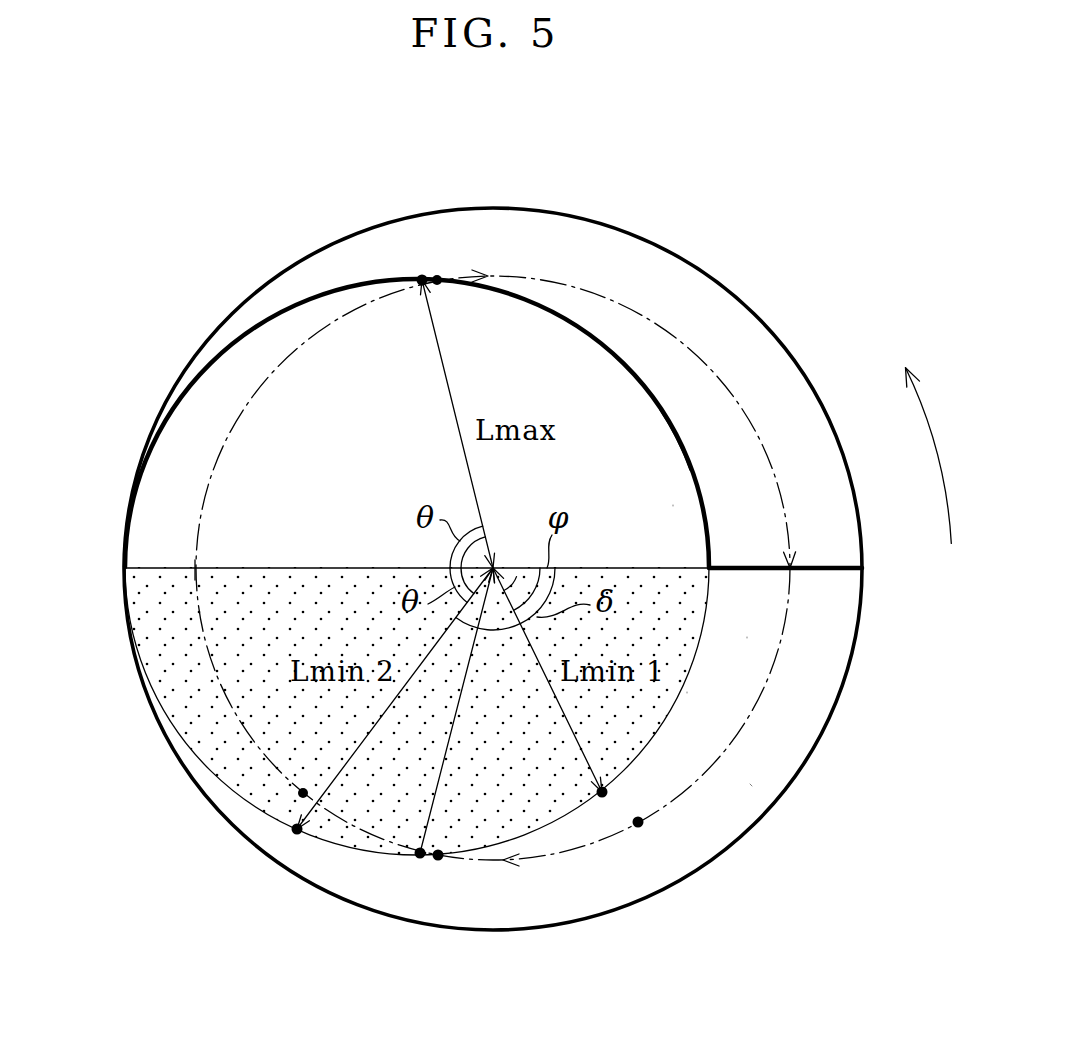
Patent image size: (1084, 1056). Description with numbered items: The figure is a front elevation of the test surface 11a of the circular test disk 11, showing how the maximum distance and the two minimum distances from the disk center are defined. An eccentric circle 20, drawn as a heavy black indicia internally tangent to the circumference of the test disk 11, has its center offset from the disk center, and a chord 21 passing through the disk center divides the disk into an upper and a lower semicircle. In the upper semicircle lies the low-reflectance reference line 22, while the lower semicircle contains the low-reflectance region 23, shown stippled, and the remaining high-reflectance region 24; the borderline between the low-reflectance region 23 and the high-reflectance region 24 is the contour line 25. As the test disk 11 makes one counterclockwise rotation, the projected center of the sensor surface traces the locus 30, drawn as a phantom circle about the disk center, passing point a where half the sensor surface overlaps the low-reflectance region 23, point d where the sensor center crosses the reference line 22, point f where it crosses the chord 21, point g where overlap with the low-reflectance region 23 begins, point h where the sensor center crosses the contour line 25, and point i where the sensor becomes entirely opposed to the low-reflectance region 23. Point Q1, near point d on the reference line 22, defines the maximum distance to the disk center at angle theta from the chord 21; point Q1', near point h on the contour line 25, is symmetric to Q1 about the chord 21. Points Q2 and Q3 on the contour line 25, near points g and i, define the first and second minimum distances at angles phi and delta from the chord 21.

The test disk 11 is at (168, 772).
The test surface 11a is at (747, 783).
The eccentric circle 20 is at (318, 282).
The chord 21 is at (827, 573).
The low-reflectance reference line 22 is at (677, 440).
The low-reflectance region 23 is at (160, 625).
The high-reflectance region 24 is at (673, 505).
The contour line 25 is at (687, 692).
The locus 30 is at (573, 283).
The point Q1 is at (418, 224).
The point Q1' is at (395, 907).
The point Q2 is at (602, 792).
The point Q3 is at (297, 835).
The point a is at (196, 567).
The point d is at (439, 275).
The point f is at (793, 565).
The point g is at (638, 828).
The point h is at (438, 861).
The point i is at (301, 797).